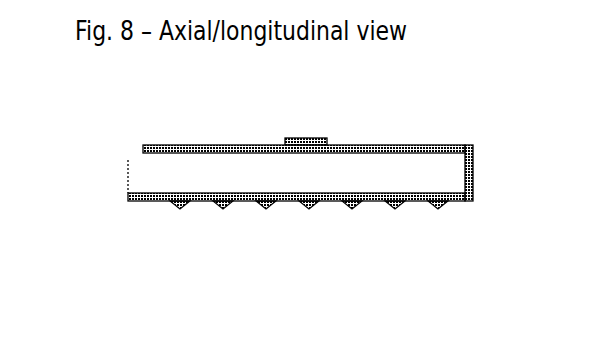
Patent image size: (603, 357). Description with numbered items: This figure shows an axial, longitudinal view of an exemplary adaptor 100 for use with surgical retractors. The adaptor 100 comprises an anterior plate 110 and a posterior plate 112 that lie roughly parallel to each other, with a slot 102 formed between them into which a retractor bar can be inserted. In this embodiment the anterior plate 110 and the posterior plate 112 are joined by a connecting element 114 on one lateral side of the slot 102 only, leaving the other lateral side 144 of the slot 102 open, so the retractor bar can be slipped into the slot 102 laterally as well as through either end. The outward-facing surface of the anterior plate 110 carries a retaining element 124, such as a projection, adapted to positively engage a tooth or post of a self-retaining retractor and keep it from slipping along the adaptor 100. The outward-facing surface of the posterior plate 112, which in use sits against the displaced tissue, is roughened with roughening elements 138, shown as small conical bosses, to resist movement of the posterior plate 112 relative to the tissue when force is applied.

The adaptor 100 is at (499, 141).
The slot 102 is at (190, 160).
The anterior plate 110 is at (163, 147).
The posterior plate 112 is at (377, 201).
The connecting element 114 is at (474, 185).
The retaining element 124 is at (325, 138).
The roughening elements 138 is at (310, 209).
The open lateral side 144 is at (143, 170).